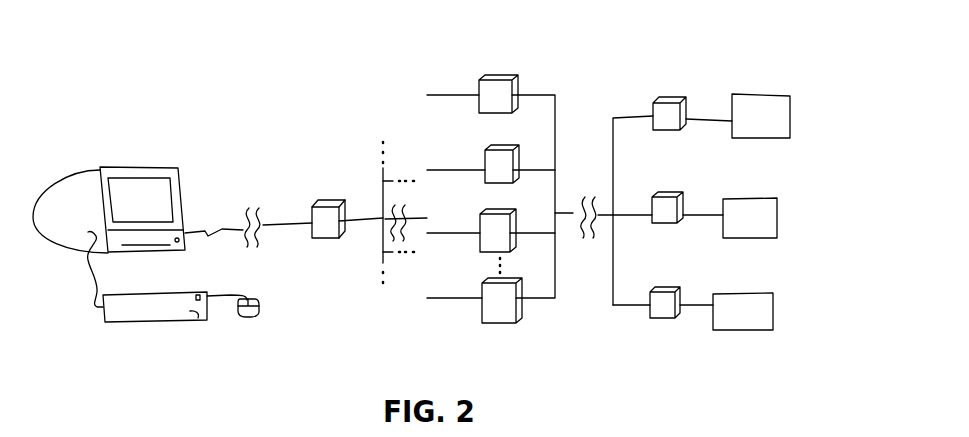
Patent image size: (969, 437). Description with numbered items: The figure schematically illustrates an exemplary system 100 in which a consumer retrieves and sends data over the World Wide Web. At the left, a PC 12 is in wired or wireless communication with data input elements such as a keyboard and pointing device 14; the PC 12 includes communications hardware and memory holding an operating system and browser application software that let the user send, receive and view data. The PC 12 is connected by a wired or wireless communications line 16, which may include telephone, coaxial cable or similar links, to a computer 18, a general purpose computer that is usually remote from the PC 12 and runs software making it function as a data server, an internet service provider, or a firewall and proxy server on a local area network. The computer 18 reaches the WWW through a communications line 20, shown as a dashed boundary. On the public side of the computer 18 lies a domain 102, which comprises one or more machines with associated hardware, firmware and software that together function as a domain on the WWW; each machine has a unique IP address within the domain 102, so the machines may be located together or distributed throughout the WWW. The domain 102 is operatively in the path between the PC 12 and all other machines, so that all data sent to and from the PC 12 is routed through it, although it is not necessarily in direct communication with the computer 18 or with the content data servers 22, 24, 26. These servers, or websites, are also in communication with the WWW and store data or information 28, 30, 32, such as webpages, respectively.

The system 100 is at (150, 96).
The PC 12 is at (79, 181).
The keyboard and pointing device 14 is at (200, 320).
The communications line 16 is at (223, 228).
The computer 18 is at (319, 200).
The communications line 20 is at (382, 218).
The domain 102 is at (435, 92).
The content data server 22 is at (665, 100).
The content data server 24 is at (672, 167).
The content data server 26 is at (665, 288).
The data or information 28 is at (787, 121).
The data or information 30 is at (773, 219).
The data or information 32 is at (767, 313).